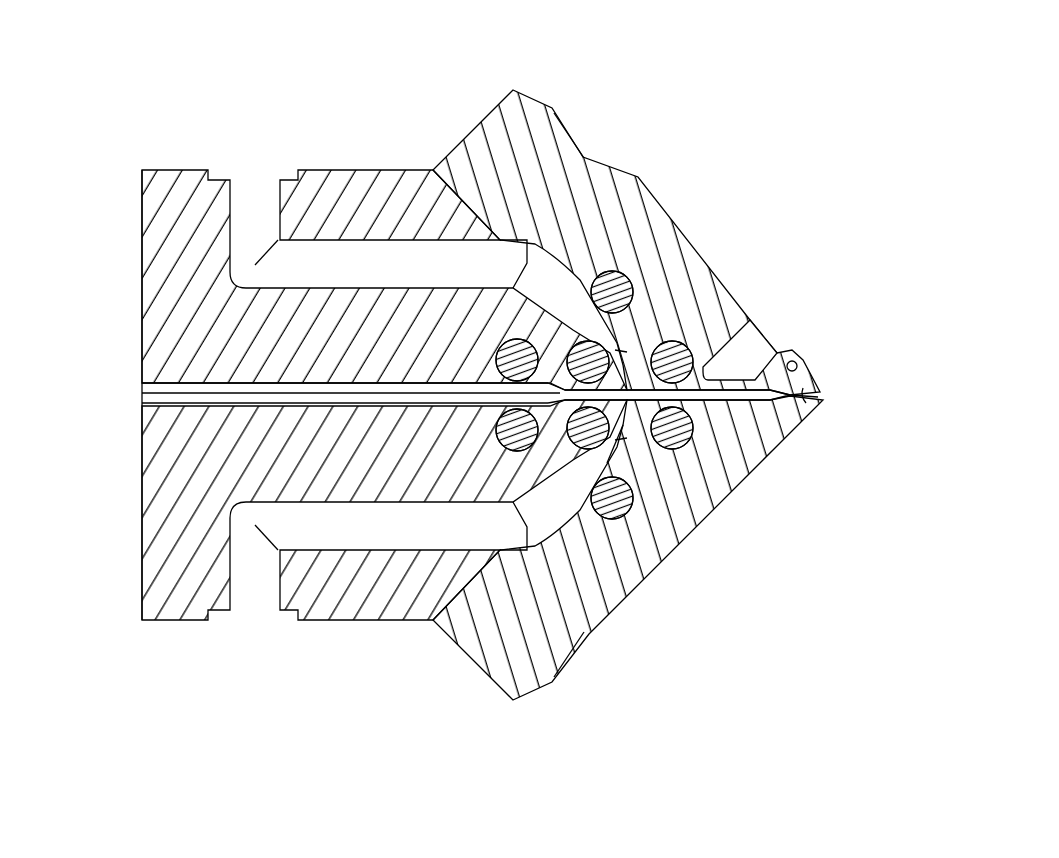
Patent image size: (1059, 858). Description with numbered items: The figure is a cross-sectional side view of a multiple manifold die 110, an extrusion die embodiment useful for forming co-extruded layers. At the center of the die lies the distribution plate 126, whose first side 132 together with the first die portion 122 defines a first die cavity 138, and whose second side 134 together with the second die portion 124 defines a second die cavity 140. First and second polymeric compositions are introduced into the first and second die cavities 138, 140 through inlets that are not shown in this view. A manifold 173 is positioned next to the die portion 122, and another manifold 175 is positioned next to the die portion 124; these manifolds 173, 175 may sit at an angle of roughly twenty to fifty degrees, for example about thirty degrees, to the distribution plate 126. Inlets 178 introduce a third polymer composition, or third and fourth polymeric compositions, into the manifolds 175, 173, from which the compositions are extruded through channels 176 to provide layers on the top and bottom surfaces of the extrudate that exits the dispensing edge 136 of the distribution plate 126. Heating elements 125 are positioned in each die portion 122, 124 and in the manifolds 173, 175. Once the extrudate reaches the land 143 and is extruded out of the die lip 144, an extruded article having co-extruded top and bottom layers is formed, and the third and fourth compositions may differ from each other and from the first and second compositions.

The multiple manifold die 110 is at (644, 88).
The first die portion 122 is at (178, 148).
The second die portion 124 is at (178, 640).
The inlets 178 is at (362, 256).
The manifold 173 is at (654, 184).
The manifold 175 is at (660, 570).
The heating elements 125 is at (613, 345).
The channels 176 is at (621, 356).
The dispensing edge 136 is at (616, 502).
The land 143 is at (815, 406).
The die lip 144 is at (812, 388).
The first side 132 is at (162, 380).
The second side 134 is at (165, 410).
The first die cavity 138 is at (150, 386).
The second die cavity 140 is at (150, 404).
The distribution plate 126 is at (142, 394).